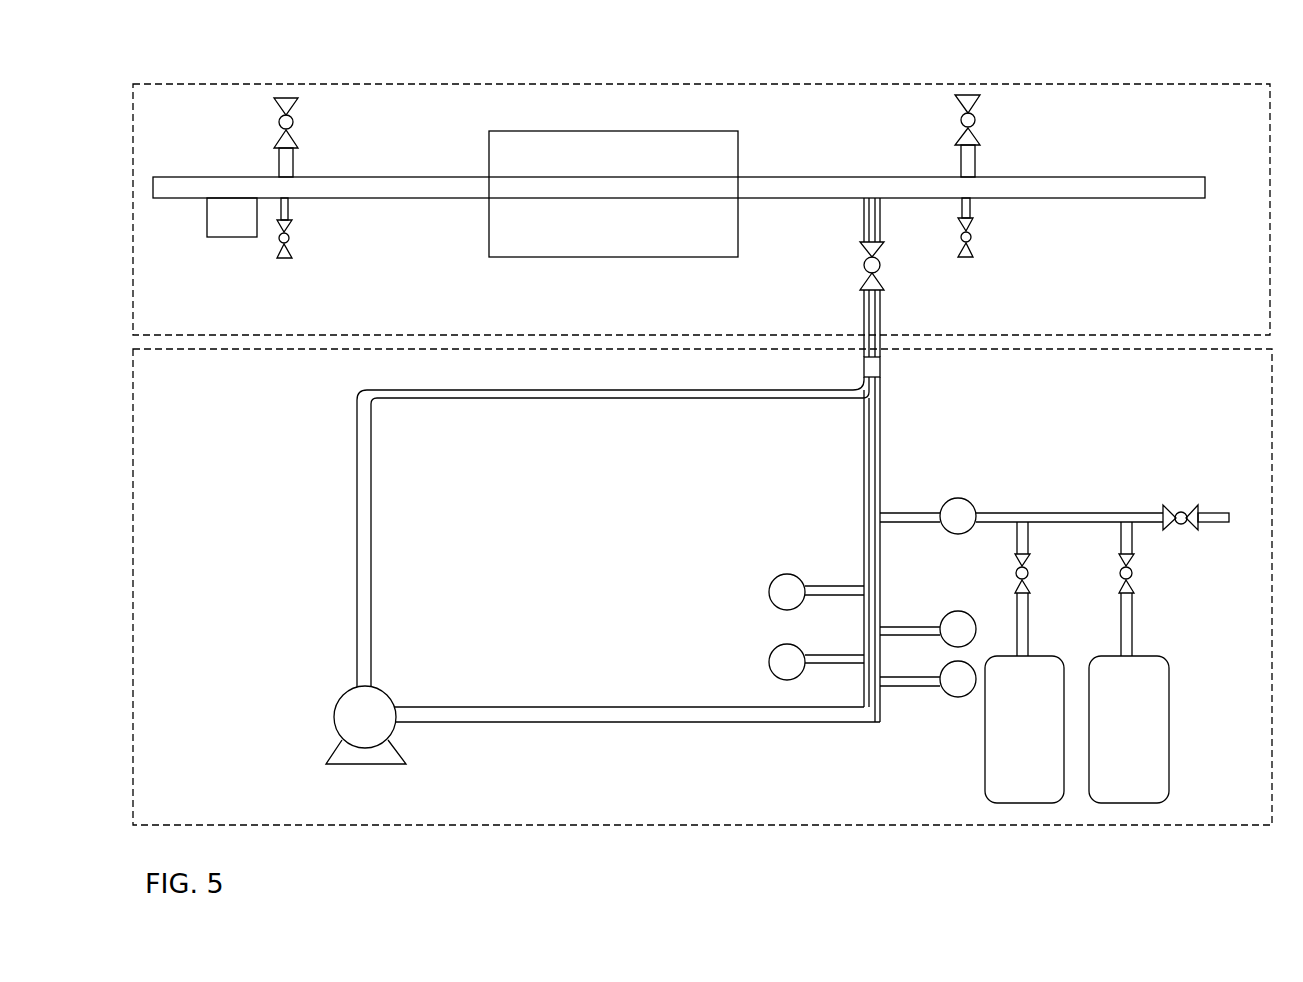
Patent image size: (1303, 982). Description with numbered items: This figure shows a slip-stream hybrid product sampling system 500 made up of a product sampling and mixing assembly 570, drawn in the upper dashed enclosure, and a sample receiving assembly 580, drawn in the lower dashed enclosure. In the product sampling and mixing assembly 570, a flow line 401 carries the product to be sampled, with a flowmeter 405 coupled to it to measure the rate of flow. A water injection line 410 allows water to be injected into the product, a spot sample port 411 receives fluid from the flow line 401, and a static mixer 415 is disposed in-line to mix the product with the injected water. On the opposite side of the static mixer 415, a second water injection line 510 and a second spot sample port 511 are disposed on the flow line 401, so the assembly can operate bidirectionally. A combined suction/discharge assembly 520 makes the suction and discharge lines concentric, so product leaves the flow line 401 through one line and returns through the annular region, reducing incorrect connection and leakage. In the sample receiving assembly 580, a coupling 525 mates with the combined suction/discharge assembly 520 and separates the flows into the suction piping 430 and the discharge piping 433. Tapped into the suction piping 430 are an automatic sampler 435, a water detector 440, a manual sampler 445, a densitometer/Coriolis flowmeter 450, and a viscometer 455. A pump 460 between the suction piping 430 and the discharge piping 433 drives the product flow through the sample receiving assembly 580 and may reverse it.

The slip-stream hybrid product sampling system 500 is at (303, 73).
The product sampling and mixing assembly 570 is at (1010, 83).
The sample receiving assembly 580 is at (1132, 825).
The flow line 401 is at (388, 177).
The flowmeter 405 is at (237, 237).
The water injection line 410 is at (278, 162).
The spot sample port 411 is at (292, 200).
The static mixer 415 is at (738, 143).
The second water injection line 510 is at (959, 157).
The second spot sample port 511 is at (968, 200).
The combined suction/discharge assembly 520 is at (864, 305).
The coupling 525 is at (879, 365).
The suction piping 430 is at (864, 492).
The discharge piping 433 is at (357, 523).
The automatic sampler 435 is at (957, 497).
The water detector 440 is at (960, 610).
The manual sampler 445 is at (772, 582).
The densitometer/Coriolis flowmeter 450 is at (772, 652).
The viscometer 455 is at (963, 697).
The pump 460 is at (335, 708).